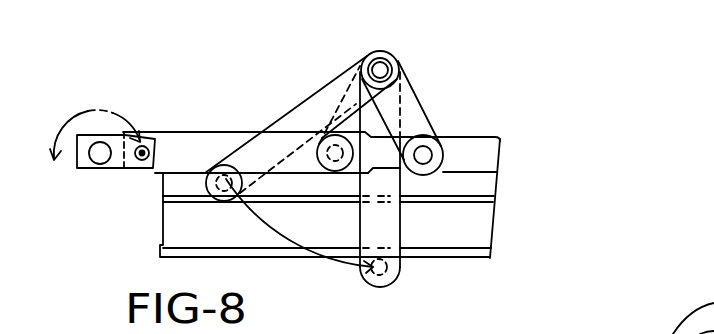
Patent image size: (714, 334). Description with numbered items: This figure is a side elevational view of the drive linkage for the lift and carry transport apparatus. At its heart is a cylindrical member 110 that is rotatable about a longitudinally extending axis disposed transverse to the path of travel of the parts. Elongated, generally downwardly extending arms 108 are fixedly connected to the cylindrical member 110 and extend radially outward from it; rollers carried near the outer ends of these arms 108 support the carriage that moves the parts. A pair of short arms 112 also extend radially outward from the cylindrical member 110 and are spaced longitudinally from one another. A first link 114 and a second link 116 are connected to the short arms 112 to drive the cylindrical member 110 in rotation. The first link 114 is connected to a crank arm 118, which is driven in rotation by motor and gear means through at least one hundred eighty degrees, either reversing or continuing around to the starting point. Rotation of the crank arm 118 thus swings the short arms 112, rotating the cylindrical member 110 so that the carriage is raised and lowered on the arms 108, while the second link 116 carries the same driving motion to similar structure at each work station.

The arms 108 is at (272, 124).
The cylindrical member 110 is at (387, 52).
The short arms 112 is at (342, 103).
The first link 114 is at (95, 119).
The second link 116 is at (492, 139).
The crank arm 118 is at (98, 171).